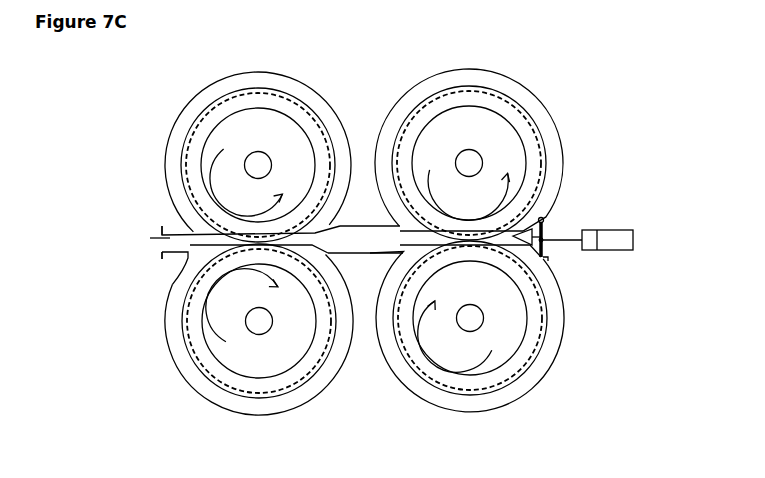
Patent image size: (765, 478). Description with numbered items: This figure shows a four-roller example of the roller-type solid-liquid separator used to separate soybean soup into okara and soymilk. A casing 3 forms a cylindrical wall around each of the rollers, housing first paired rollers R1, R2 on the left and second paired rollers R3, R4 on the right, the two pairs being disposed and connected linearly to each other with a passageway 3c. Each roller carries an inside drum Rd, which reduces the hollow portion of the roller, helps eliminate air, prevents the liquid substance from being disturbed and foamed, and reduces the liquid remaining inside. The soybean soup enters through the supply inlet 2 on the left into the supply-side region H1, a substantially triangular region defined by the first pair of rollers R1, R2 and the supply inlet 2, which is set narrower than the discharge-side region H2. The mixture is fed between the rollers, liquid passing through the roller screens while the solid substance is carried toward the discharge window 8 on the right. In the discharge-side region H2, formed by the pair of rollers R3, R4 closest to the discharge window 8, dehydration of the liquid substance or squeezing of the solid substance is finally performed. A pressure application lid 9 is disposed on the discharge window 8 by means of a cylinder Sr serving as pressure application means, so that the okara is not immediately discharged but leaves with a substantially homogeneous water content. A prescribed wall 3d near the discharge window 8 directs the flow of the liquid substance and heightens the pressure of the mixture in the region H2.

The supply inlet 2 is at (150, 238).
The casing 3 is at (202, 92).
The passageway 3c is at (372, 128).
The prescribed wall 3d is at (567, 312).
The discharge window 8 is at (547, 258).
The pressure application lid 9 is at (544, 230).
The region on the supply side H1 is at (212, 242).
The region on the discharge side H2 is at (542, 217).
The first roller R1 is at (295, 97).
The second roller R2 is at (213, 379).
The third roller R3 is at (529, 106).
The fourth roller R4 is at (472, 394).
The inside drum Rd is at (203, 150).
The cylinder Sr is at (623, 233).